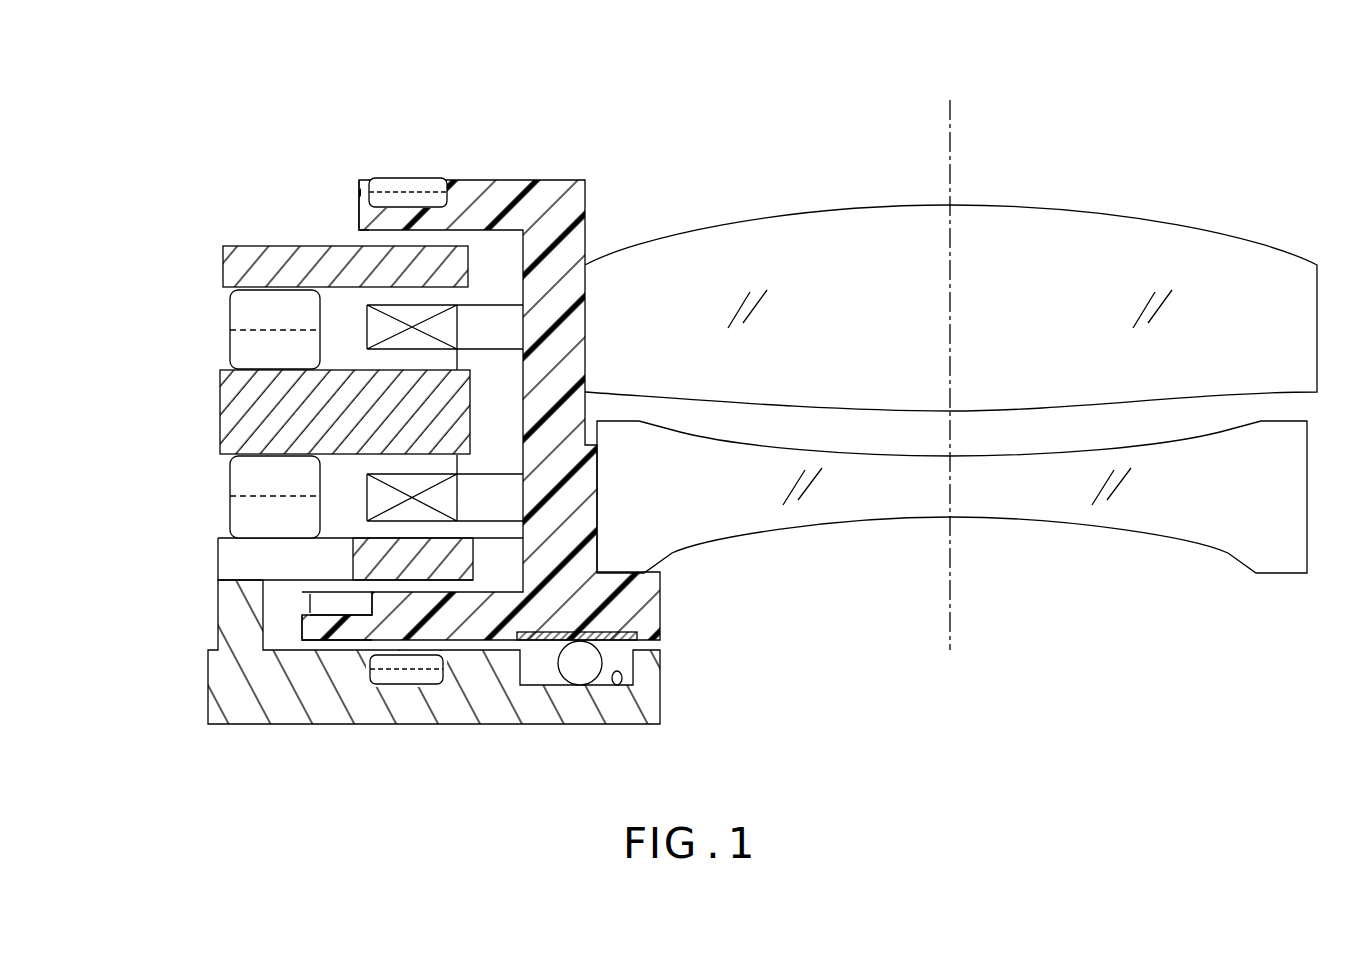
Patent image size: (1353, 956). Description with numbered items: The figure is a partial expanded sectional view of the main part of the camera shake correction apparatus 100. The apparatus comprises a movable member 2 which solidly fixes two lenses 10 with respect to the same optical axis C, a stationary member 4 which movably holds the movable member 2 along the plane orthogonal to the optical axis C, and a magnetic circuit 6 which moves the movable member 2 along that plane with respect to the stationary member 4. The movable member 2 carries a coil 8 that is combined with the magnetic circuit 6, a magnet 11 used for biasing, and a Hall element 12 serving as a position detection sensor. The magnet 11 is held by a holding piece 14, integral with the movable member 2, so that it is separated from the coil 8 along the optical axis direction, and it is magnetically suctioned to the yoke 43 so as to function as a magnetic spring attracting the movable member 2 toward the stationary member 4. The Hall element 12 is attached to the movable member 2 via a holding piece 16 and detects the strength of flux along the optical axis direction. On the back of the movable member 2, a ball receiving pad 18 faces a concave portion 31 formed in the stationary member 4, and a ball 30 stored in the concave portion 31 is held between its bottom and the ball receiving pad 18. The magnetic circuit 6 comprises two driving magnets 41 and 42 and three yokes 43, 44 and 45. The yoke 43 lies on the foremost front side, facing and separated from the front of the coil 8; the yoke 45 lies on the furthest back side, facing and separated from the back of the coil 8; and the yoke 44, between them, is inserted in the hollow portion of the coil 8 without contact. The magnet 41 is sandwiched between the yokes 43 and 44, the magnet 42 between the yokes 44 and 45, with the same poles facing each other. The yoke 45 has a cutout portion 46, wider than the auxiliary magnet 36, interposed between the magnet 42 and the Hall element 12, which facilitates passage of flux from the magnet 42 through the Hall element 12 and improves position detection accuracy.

The camera shake correction apparatus 100 is at (558, 98).
The movable member 2 is at (586, 190).
The stationary member 4 is at (323, 710).
The magnetic circuit 6 is at (178, 305).
The coil 8 is at (376, 305).
The lens 10 is at (1080, 232).
The magnet used for biasing 11 is at (421, 178).
The Hall element 12 is at (318, 603).
The holding piece 14 is at (366, 182).
The holding piece 16 is at (318, 630).
The ball receiving pad 18 is at (616, 643).
The ball 30 is at (580, 662).
The concave portion 31 is at (618, 688).
The auxiliary magnet 36 is at (432, 684).
The first magnet 41 is at (228, 343).
The second magnet 42 is at (228, 511).
The second yoke 43 is at (222, 264).
The first yoke 44 is at (220, 420).
The third yoke 45 is at (490, 558).
The cutout portion 46 is at (237, 562).
The optical axis C is at (952, 112).